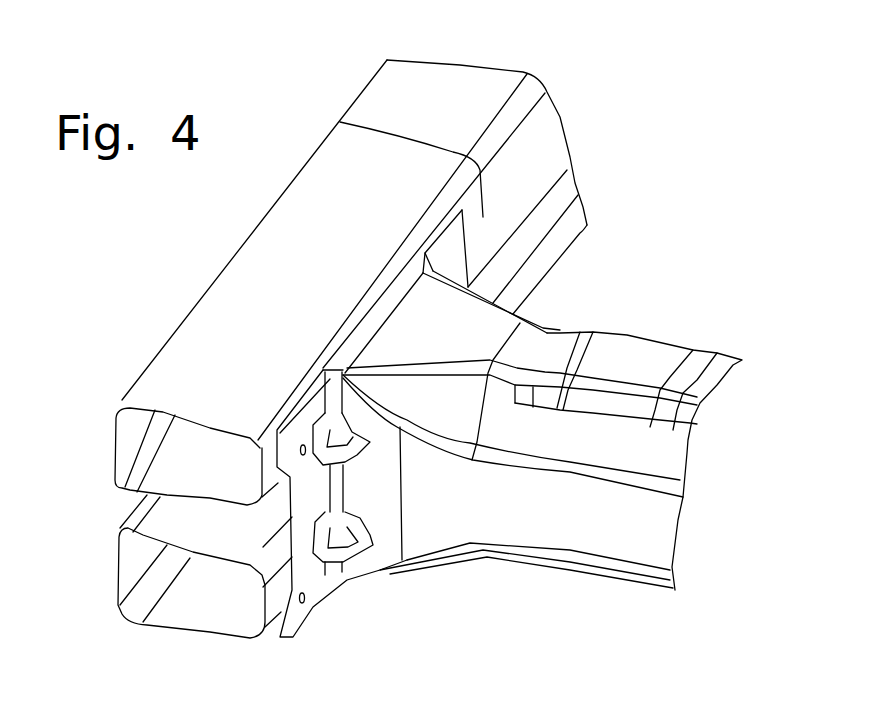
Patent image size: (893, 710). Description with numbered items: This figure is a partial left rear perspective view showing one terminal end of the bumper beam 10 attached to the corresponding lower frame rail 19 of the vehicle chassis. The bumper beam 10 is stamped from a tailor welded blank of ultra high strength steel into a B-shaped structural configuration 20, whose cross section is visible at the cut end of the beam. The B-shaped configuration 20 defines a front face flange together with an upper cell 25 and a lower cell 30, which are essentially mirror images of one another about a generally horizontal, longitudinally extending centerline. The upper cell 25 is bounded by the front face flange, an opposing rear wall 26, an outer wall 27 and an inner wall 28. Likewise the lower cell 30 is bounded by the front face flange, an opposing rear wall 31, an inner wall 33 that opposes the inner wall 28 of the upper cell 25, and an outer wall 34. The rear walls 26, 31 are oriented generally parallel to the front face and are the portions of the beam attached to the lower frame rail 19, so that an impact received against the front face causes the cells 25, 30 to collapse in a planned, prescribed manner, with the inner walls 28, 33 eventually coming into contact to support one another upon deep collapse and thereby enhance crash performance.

The bumper beam 10 is at (637, 157).
The lower frame rail 19 is at (633, 350).
The B-shaped structural configuration 20 is at (406, 352).
The upper cell 25 is at (178, 477).
The rear wall 26 is at (540, 117).
The outer wall 27 is at (453, 85).
The inner wall 28 is at (155, 411).
The lower cell 30 is at (177, 606).
The rear wall 31 is at (572, 222).
The inner wall 33 is at (165, 550).
The outer wall 34 is at (208, 630).